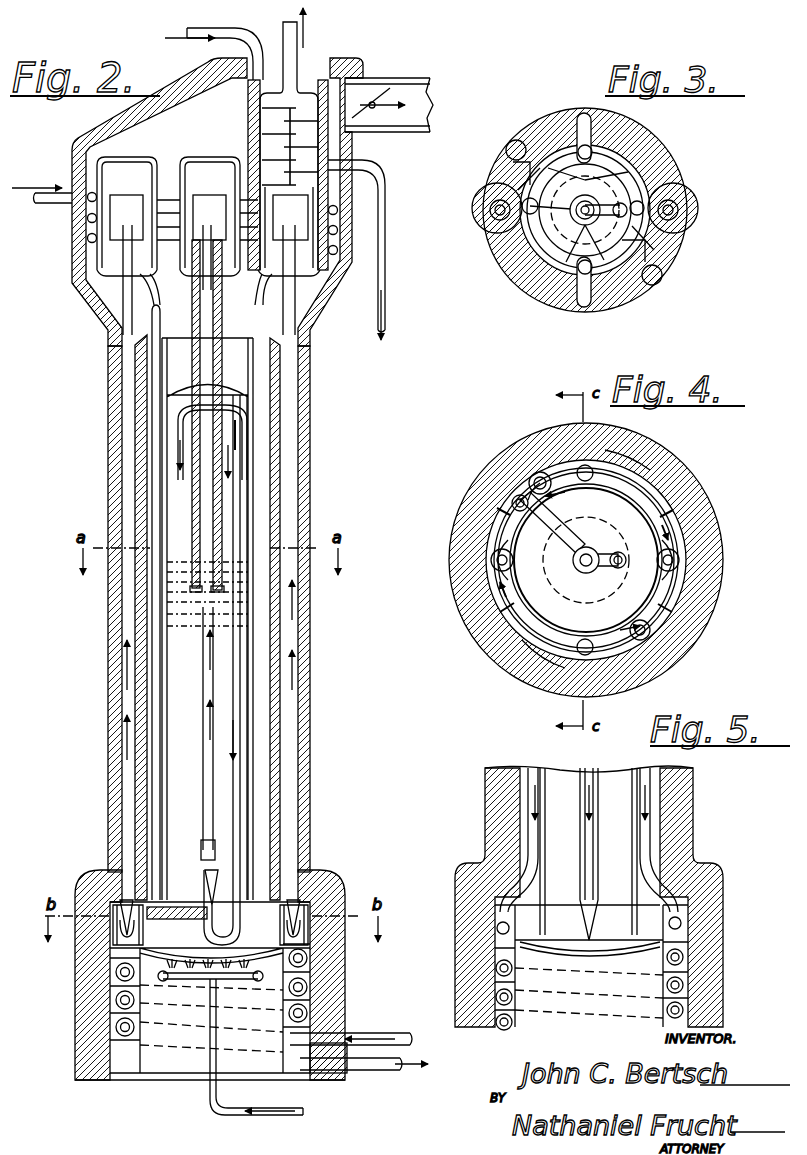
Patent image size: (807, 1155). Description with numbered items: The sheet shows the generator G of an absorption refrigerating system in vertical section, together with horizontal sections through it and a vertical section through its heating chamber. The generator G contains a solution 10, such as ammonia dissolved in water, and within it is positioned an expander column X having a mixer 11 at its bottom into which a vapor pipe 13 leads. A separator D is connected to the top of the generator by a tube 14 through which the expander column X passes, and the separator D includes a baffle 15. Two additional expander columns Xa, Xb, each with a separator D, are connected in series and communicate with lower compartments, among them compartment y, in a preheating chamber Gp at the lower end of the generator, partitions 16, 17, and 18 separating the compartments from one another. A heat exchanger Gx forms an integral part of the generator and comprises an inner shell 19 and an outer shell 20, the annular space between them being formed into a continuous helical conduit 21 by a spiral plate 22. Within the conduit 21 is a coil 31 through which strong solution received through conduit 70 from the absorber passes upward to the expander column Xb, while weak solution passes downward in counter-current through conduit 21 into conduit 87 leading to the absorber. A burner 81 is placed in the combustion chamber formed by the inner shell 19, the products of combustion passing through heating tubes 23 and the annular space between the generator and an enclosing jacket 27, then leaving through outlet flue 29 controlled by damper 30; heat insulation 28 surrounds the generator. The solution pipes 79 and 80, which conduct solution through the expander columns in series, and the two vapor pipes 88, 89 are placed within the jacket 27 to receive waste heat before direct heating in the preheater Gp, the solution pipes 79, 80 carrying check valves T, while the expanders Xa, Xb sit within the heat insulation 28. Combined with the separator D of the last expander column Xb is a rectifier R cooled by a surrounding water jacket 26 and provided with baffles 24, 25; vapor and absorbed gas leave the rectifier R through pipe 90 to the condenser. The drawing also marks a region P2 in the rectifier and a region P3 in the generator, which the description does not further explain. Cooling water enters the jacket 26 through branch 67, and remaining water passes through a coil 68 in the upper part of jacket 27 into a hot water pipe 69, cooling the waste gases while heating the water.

In FIG. 2, the solution 10 is at (207, 655).
In FIG. 2, the mixer 11 is at (206, 892).
In FIG. 5, the mixer 11 is at (582, 878).
In FIG. 2, the vapor pipe 13 is at (240, 475).
In FIG. 3, the vapor pipe 13 is at (627, 205).
In FIG. 4, the vapor pipe 13 is at (626, 556).
In FIG. 2, the tube 14 is at (192, 355).
In FIG. 3, the tube 14 is at (590, 262).
In FIG. 2, the baffle 15 is at (145, 215).
In FIG. 4, the partition 16 is at (520, 500).
In FIG. 4, the partition 17 is at (652, 632).
In FIG. 4, the partition 18 is at (515, 530).
In FIG. 2, the inner shell 19 is at (290, 1048).
In FIG. 4, the inner shell 19 is at (605, 692).
In FIG. 5, the inner shell 19 is at (670, 988).
In FIG. 2, the outer shell 20 is at (115, 995).
In FIG. 4, the outer shell 20 is at (510, 625).
In FIG. 5, the outer shell 20 is at (684, 960).
In FIG. 2, the helical conduit 21 is at (125, 1065).
In FIG. 2, the spiral plate 22 is at (125, 1045).
In FIG. 4, the heating tubes 23 is at (575, 665).
In FIG. 5, the heating tubes 23 is at (478, 880).
In FIG. 2, the baffle 24 is at (345, 145).
In FIG. 2, the baffle 25 is at (340, 162).
In FIG. 2, the water jacket 26 is at (250, 90).
In FIG. 2, the jacket 27 is at (275, 570).
In FIG. 3, the jacket 27 is at (618, 155).
In FIG. 5, the jacket 27 is at (520, 808).
In FIG. 2, the heat insulation 28 is at (303, 713).
In FIG. 3, the heat insulation 28 is at (560, 118).
In FIG. 4, the heat insulation 28 is at (558, 445).
In FIG. 5, the heat insulation 28 is at (690, 995).
In FIG. 2, the outlet flue 29 is at (430, 125).
In FIG. 2, the damper 30 is at (372, 105).
In FIG. 2, the coil 31 is at (122, 1028).
In FIG. 4, the coil 31 is at (535, 470).
In FIG. 5, the coil 31 is at (500, 975).
In FIG. 2, the branch 67 is at (218, 30).
In FIG. 2, the coil 68 is at (90, 221).
In FIG. 2, the hot water pipe 69 is at (386, 272).
In FIG. 2, the conduit 70 is at (395, 1033).
In FIG. 2, the solution pipe 79 is at (262, 322).
In FIG. 3, the solution pipe 79 is at (680, 252).
In FIG. 4, the solution pipe 79 is at (668, 670).
In FIG. 2, the solution pipe 80 is at (152, 330).
In FIG. 3, the solution pipe 80 is at (530, 215).
In FIG. 4, the solution pipe 80 is at (530, 500).
In FIG. 5, the solution pipe 80 is at (655, 900).
In FIG. 2, the burner 81 is at (192, 980).
In FIG. 2, the conduit 87 is at (372, 1072).
In FIG. 2, the vapor pipe 88 is at (202, 195).
In FIG. 3, the vapor pipe 88 is at (583, 276).
In FIG. 4, the vapor pipe 88 is at (518, 590).
In FIG. 5, the vapor pipe 88 is at (525, 858).
In FIG. 2, the vapor pipe 89 is at (160, 190).
In FIG. 3, the vapor pipe 89 is at (596, 142).
In FIG. 4, the vapor pipe 89 is at (612, 480).
In FIG. 5, the vapor pipe 89 is at (655, 840).
In FIG. 2, the pipe 90 is at (298, 36).
In FIG. 2, the chamber P2 is at (292, 105).
In FIG. 2, the chamber P3 is at (183, 497).
In FIG. 2, the rectifier R is at (275, 118).
In FIG. 2, the separator D is at (112, 140).
In FIG. 2, the generator G is at (160, 618).
In FIG. 3, the generator G is at (630, 172).
In FIG. 2, the preheating chamber Gp is at (128, 940).
In FIG. 5, the preheating chamber Gp is at (690, 915).
In FIG. 2, the heat exchanger Gx is at (211, 1061).
In FIG. 5, the heat exchanger Gx is at (589, 1000).
In FIG. 2, the expander column X is at (207, 757).
In FIG. 3, the expander column X is at (575, 228).
In FIG. 4, the expander column X is at (586, 573).
In FIG. 2, the expander column Xa is at (128, 785).
In FIG. 3, the expander column Xa is at (490, 208).
In FIG. 4, the expander column Xa is at (495, 565).
In FIG. 2, the expander column Xb is at (293, 765).
In FIG. 3, the expander column Xb is at (680, 212).
In FIG. 4, the expander column Xb is at (680, 558).
In FIG. 2, the nozzle Y is at (310, 920).
In FIG. 4, the nozzle Y is at (668, 585).
In FIG. 4, the compartment y is at (670, 640).
In FIG. 4, the lug Z is at (505, 520).
In FIG. 3, the check valve T is at (518, 148).